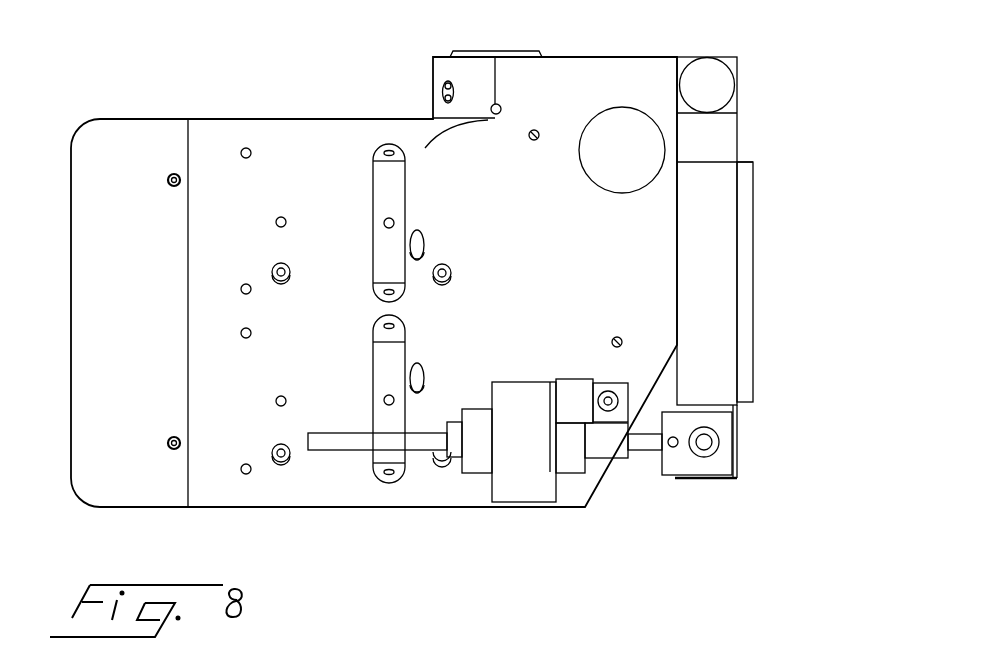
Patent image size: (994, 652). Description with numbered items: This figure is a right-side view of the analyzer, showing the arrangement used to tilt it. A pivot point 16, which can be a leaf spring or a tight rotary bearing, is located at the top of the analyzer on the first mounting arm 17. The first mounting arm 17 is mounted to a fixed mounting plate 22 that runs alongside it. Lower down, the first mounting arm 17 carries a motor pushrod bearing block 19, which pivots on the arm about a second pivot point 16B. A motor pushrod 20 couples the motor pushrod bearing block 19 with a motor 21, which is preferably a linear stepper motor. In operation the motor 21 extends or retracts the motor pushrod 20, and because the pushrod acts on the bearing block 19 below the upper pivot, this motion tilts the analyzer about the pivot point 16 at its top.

The pivot point 16 is at (708, 73).
The first mounting arm 17 is at (714, 284).
The mounting plate 22 is at (747, 203).
The second pivot point 16B is at (704, 442).
The motor pushrod bearing block 19 is at (702, 467).
The motor pushrod 20 is at (652, 445).
The motor 21 is at (522, 392).